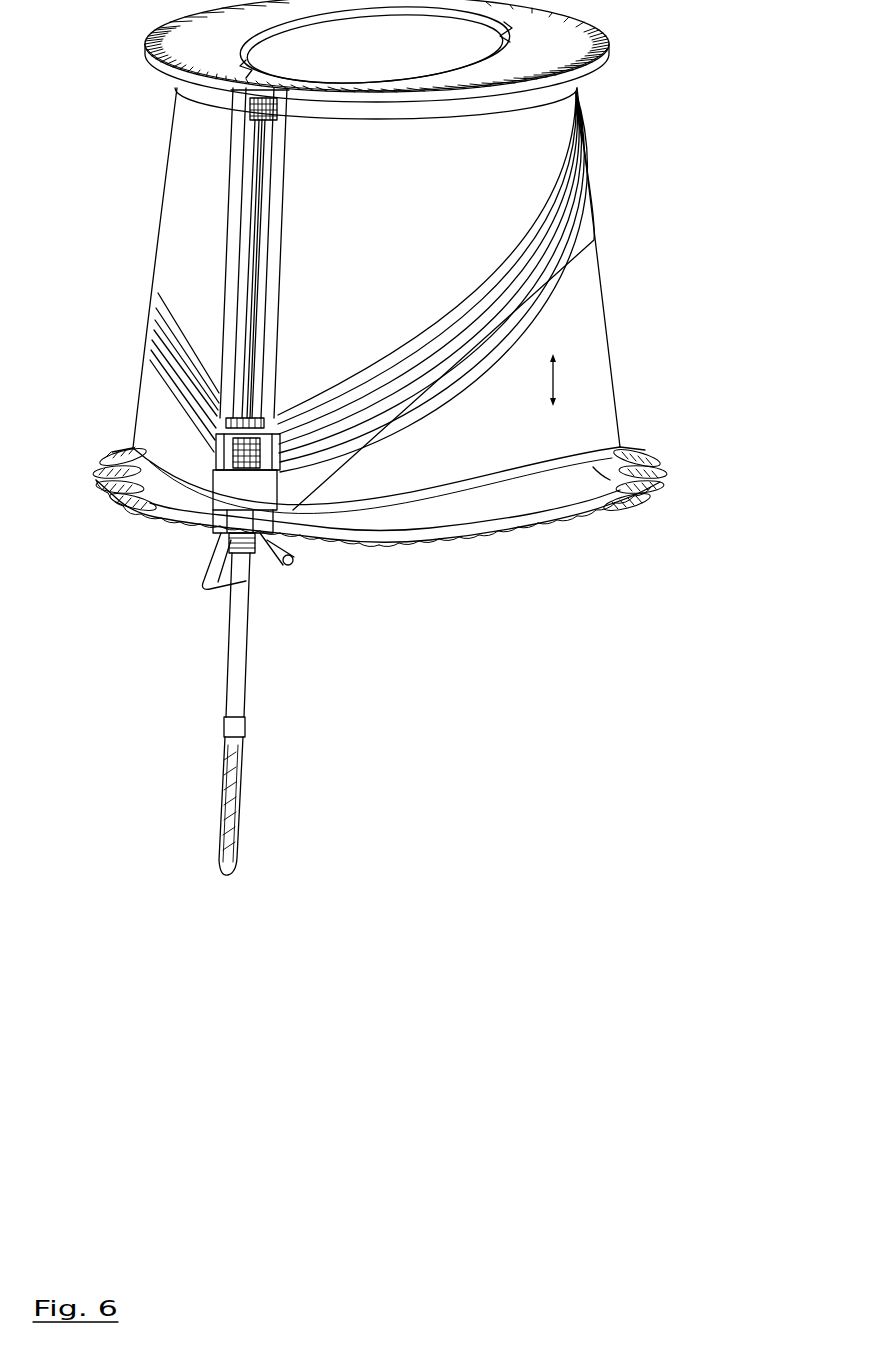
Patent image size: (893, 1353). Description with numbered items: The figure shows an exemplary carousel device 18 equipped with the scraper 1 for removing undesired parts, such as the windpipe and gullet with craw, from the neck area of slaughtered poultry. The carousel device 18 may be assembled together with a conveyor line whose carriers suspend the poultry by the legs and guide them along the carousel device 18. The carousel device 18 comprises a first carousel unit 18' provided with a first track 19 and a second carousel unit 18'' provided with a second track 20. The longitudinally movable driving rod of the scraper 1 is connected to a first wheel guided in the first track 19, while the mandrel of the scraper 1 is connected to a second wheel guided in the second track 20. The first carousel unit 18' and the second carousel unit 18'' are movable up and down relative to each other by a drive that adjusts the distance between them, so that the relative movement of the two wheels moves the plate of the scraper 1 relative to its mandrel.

The scraper 1 is at (213, 848).
The carousel device 18 is at (427, 301).
The first carousel unit 18' is at (617, 125).
The second carousel unit 18'' is at (649, 366).
The first track 19 is at (290, 422).
The second track 20 is at (290, 483).